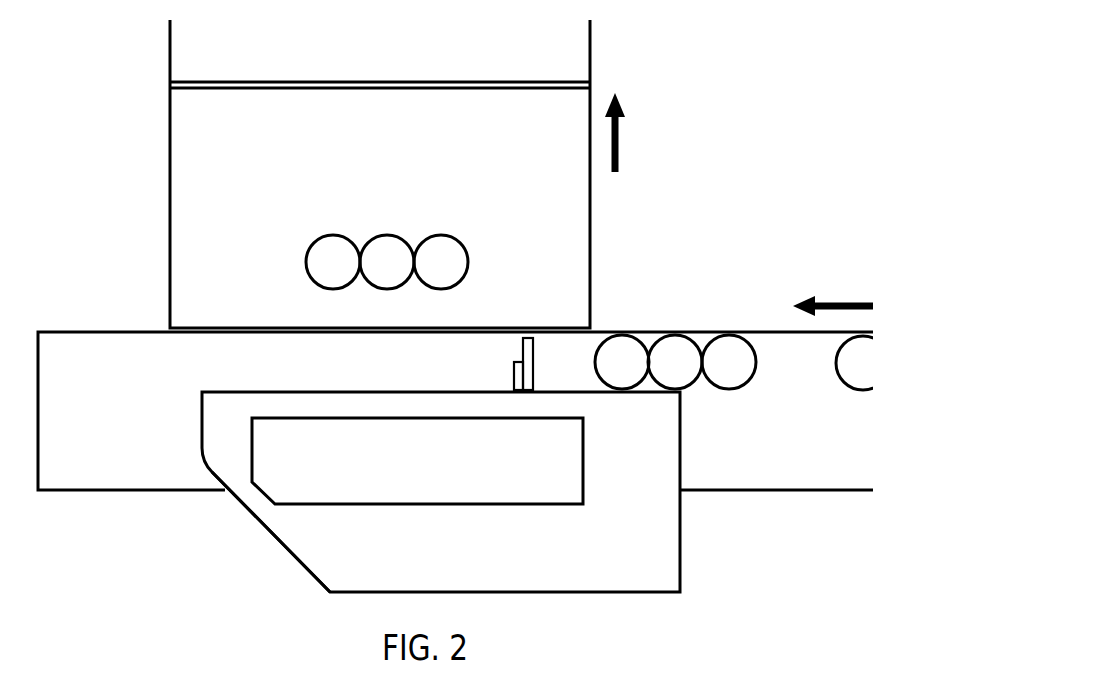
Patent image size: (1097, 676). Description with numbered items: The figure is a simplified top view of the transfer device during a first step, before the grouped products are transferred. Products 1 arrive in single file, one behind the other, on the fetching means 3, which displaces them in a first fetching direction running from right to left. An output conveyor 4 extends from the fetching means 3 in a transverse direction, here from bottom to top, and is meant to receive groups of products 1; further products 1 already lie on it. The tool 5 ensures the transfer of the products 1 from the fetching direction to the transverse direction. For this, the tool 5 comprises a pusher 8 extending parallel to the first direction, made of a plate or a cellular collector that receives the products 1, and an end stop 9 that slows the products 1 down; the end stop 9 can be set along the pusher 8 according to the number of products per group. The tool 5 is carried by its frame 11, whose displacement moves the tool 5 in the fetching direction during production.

The product 1 is at (729, 358).
The fetching means 3 is at (97, 360).
The output conveyor 4 is at (193, 205).
The tool 5 is at (692, 539).
The pusher 8 is at (612, 383).
The end stop 9 is at (542, 362).
The frame 11 is at (322, 551).